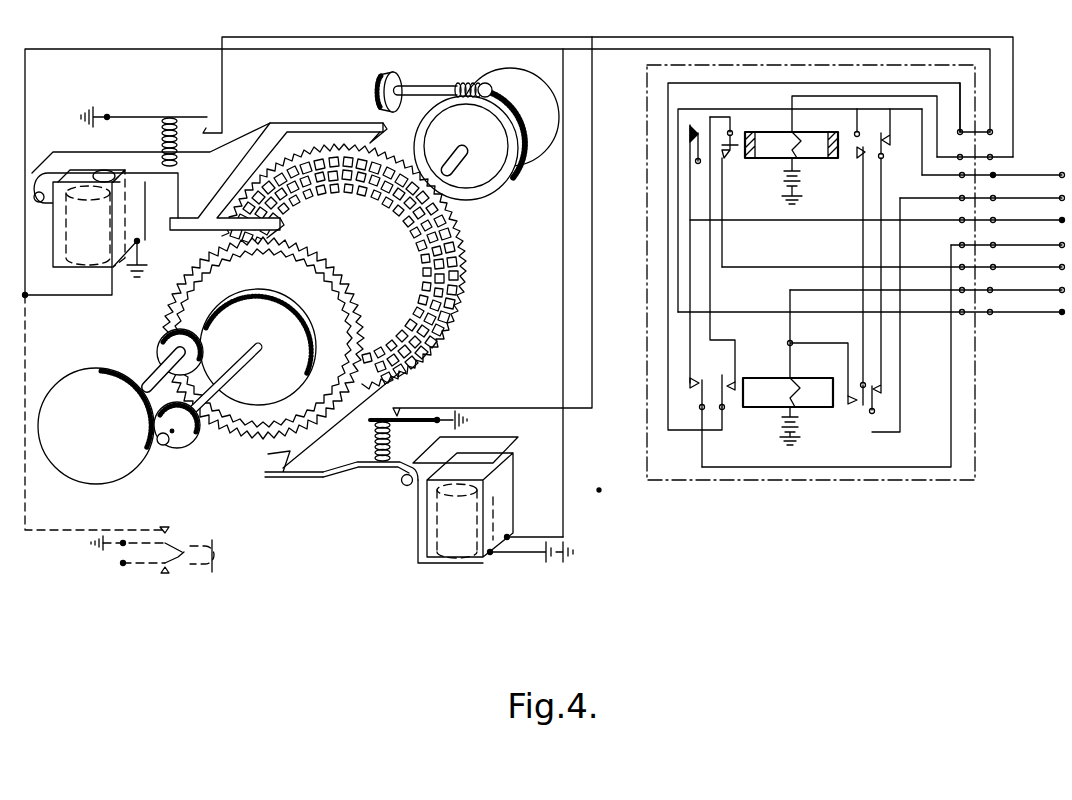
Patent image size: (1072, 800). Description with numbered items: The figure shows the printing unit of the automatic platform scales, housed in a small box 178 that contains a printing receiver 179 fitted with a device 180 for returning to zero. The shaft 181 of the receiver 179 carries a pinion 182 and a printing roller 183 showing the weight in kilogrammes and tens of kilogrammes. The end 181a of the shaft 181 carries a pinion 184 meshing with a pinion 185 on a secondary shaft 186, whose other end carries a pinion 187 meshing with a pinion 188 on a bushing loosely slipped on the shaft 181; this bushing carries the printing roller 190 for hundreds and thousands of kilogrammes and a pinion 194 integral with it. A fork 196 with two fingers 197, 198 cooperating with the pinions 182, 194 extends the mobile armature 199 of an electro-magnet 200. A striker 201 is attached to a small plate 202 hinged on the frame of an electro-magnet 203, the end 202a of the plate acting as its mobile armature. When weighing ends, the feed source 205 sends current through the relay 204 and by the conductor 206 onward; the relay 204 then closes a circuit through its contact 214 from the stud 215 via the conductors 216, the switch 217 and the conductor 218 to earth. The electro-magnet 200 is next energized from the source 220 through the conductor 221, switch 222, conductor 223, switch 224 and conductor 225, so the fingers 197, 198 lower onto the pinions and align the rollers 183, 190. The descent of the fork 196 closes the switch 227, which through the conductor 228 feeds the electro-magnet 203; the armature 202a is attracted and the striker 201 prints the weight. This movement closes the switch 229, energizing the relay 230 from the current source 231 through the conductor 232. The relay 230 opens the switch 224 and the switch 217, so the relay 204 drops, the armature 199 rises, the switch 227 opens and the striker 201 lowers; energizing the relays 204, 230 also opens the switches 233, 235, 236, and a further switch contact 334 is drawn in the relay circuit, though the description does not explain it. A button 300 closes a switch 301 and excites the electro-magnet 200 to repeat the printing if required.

The small box 178 is at (602, 492).
The printing receiver 179 is at (538, 130).
The device for returning to zero 180 is at (378, 80).
The shaft 181 is at (472, 183).
The end of the shaft 181a is at (214, 396).
The pinion 182 is at (462, 258).
The printing roller 183 is at (438, 318).
The pinion 184 is at (180, 447).
The pinion 185 is at (111, 467).
The secondary shaft 186 is at (153, 371).
The pinion 187 is at (162, 341).
The pinion 188 is at (258, 347).
The printing roller 190 is at (396, 369).
The pinion 194 is at (344, 324).
The fork 196 is at (247, 143).
The finger 197 is at (380, 121).
The finger 198 is at (284, 239).
The mobile armature 199 is at (140, 152).
The electro-magnet 200 is at (146, 211).
The striker 201 is at (291, 478).
The small plate 202 is at (339, 468).
The end of the small plate 202a is at (486, 440).
The electro-magnet 203 is at (505, 485).
The relay 204 is at (762, 409).
The feed source 205 is at (793, 432).
The conductor 206 is at (1012, 290).
The contact 214 is at (874, 415).
The stud 215 is at (850, 416).
The conductors 216 is at (862, 245).
The switch 217 is at (860, 158).
The conductor 218 is at (1012, 313).
The source 220 is at (146, 270).
The conductor 221 is at (668, 163).
The switch 222 is at (738, 382).
The conductor 223 is at (711, 294).
The switch 224 is at (731, 152).
The conductor 225 is at (1017, 267).
The switch 227 is at (200, 133).
The conductor 228 is at (568, 221).
The switch 229 is at (415, 406).
The relay 230 is at (805, 153).
The current source 231 is at (800, 203).
The conductor 232 is at (528, 407).
The switch 233 is at (875, 402).
The switch 235 is at (700, 125).
The switch 236 is at (697, 390).
The button 300 is at (224, 554).
The switch 301 is at (173, 528).
The switch contact 334 is at (887, 150).